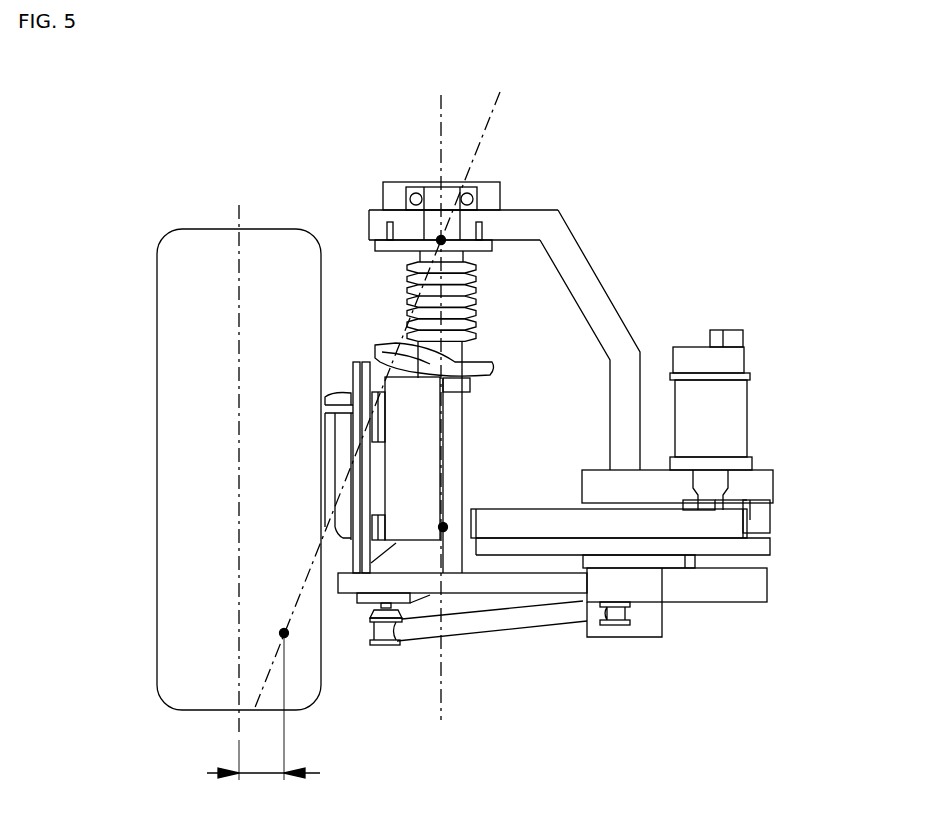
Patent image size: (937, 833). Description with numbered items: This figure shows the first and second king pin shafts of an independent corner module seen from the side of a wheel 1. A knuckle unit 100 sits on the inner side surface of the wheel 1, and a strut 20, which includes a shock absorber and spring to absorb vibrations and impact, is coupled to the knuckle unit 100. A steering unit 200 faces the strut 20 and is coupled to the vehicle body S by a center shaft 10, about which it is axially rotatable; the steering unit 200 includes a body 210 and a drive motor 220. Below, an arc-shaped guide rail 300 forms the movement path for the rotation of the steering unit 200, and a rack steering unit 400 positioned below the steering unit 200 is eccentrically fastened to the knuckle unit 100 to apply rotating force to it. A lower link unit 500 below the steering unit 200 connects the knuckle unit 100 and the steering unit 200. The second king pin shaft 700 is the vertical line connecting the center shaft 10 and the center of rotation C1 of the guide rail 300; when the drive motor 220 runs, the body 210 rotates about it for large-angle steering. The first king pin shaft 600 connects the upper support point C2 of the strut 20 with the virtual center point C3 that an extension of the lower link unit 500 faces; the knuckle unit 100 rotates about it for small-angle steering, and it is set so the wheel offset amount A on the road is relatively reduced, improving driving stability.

The wheel 1 is at (170, 254).
The center shaft 10 is at (436, 195).
The vehicle body S is at (493, 187).
The strut 20 is at (470, 296).
The knuckle unit 100 is at (413, 553).
The steering unit 200 is at (766, 442).
The body 210 is at (595, 278).
The drive motor 220 is at (733, 400).
The guide rail 300 is at (757, 547).
The rack steering unit 400 is at (731, 604).
The lower link unit 500 is at (519, 634).
The first king pin shaft 600 is at (396, 388).
The second king pin shaft 700 is at (437, 393).
The center of rotation of the guide rail C1 is at (443, 527).
The upper support point of the strut C2 is at (440, 240).
The virtual center point C3 is at (286, 634).
The wheel offset amount A is at (263, 709).